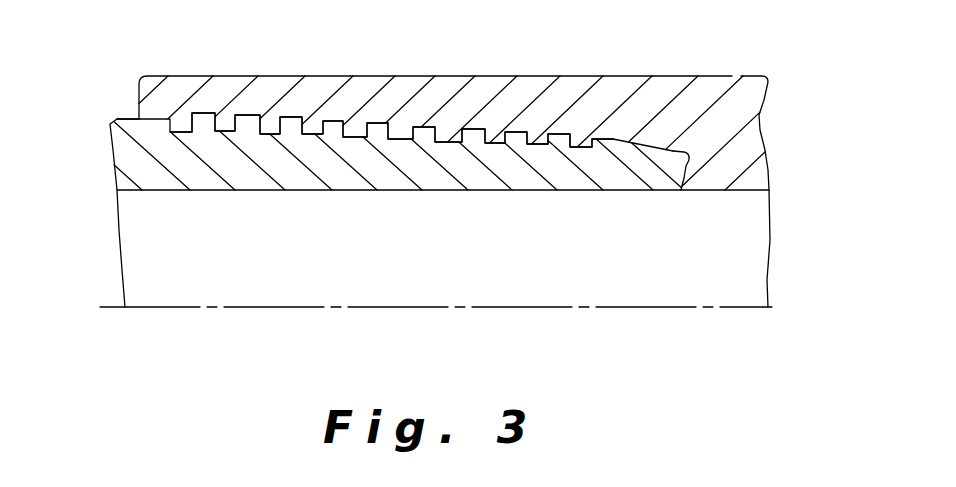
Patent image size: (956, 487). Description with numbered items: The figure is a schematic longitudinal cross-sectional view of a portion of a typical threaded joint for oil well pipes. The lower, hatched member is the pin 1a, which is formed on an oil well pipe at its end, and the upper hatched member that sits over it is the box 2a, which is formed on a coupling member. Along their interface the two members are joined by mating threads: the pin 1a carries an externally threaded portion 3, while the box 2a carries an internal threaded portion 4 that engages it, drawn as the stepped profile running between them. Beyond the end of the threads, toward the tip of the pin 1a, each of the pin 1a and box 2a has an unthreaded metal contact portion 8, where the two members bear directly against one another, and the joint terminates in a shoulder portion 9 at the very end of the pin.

The pin 1a is at (135, 163).
The box 2a is at (380, 91).
The externally threaded portion 3 is at (232, 135).
The internal threaded portion 4 is at (274, 132).
The unthreaded metal contact portion 8 is at (647, 142).
The shoulder portion 9 is at (695, 170).